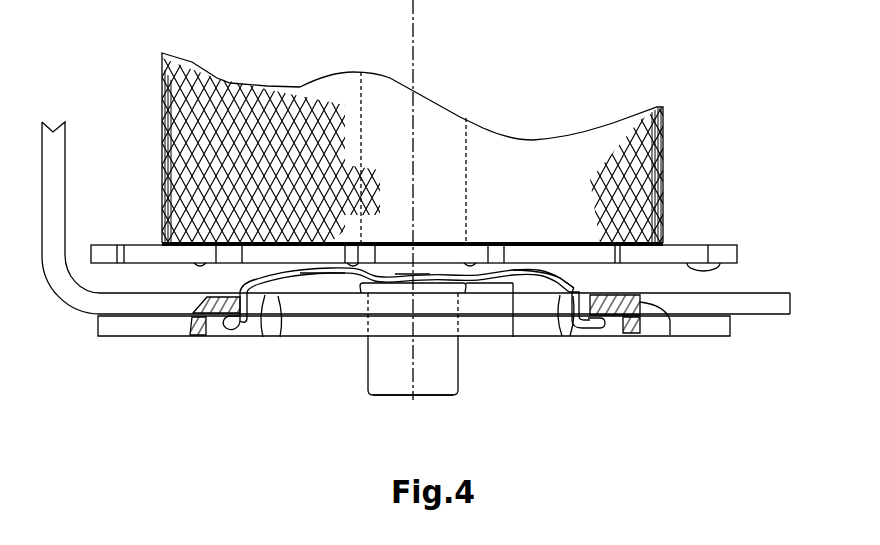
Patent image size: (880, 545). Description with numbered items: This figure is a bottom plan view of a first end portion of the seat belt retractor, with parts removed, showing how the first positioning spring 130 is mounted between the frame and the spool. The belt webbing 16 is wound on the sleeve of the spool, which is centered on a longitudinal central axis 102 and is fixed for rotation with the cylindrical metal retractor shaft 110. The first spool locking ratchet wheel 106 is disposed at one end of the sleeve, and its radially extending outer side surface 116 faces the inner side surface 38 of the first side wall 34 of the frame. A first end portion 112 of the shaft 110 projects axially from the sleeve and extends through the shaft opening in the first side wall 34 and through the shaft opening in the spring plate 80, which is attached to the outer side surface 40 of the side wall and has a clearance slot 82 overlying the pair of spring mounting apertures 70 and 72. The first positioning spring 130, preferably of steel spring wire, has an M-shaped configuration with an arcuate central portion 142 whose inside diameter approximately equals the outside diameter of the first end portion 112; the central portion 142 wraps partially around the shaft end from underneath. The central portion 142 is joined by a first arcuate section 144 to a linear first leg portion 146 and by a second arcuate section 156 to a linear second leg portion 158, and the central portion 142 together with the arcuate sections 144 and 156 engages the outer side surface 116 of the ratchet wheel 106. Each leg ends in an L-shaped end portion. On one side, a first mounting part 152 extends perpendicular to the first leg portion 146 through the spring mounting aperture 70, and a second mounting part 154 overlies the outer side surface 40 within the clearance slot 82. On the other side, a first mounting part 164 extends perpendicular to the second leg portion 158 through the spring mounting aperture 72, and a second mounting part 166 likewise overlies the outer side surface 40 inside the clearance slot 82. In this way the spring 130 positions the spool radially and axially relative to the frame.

The belt webbing 16 is at (323, 88).
The longitudinal central axis 102 is at (412, 10).
The first spool locking ratchet wheel 106 is at (681, 236).
The outer side surface of first ratchet wheel 116 is at (722, 262).
The first side wall 34 is at (722, 284).
The inner side surface 38 is at (758, 291).
The outer side surface 40 is at (743, 316).
The spring plate 80 is at (104, 345).
The first end portion of the shaft 112 is at (377, 355).
The retractor shaft 110 is at (402, 414).
The first positioning spring 130 is at (542, 252).
The arcuate central portion 142 is at (430, 270).
The first leg portion 146 is at (560, 263).
The second arcuate section 156 is at (327, 280).
The first arcuate section 144 is at (513, 337).
The second leg portion 158 is at (265, 274).
The second mounting part 166 is at (232, 327).
The first mounting part 164 is at (205, 298).
The spring mounting aperture 72 is at (256, 332).
The first mounting part 152 is at (577, 335).
The second mounting part 154 is at (598, 330).
The clearance slot 82 is at (613, 333).
The spring mounting aperture 70 is at (640, 303).